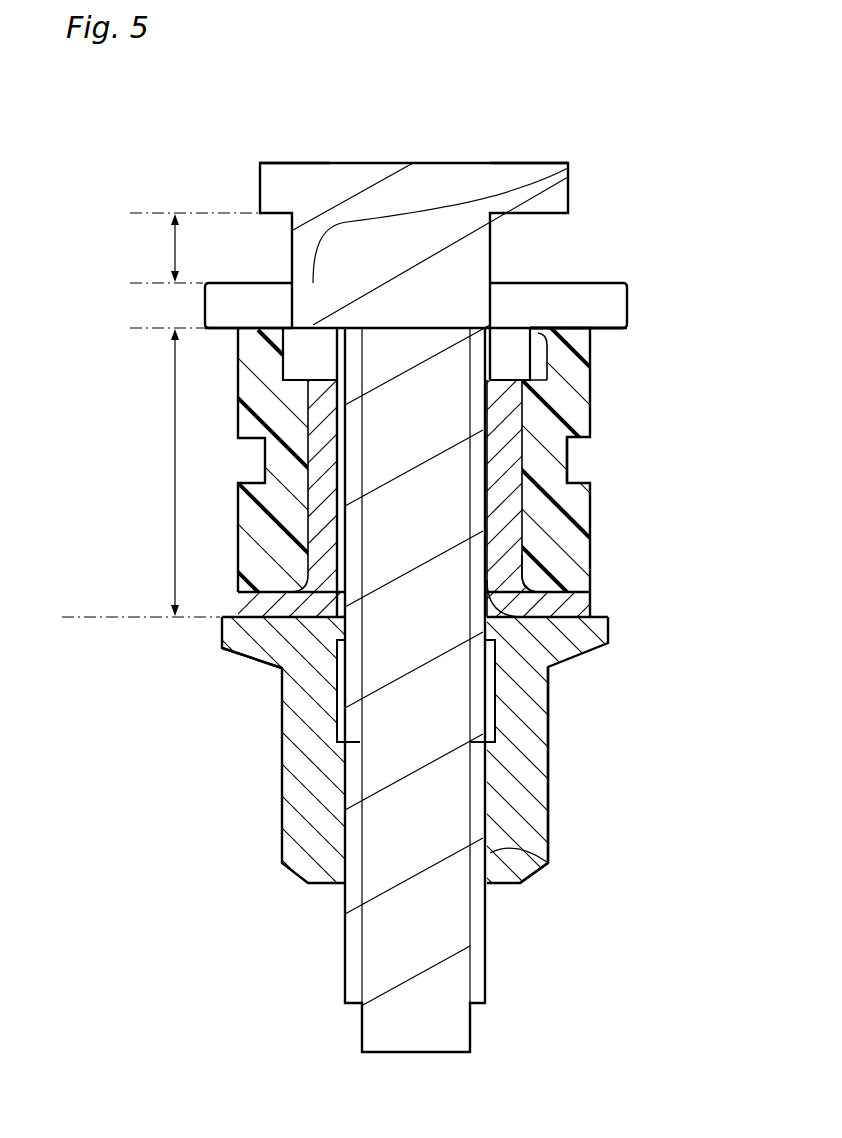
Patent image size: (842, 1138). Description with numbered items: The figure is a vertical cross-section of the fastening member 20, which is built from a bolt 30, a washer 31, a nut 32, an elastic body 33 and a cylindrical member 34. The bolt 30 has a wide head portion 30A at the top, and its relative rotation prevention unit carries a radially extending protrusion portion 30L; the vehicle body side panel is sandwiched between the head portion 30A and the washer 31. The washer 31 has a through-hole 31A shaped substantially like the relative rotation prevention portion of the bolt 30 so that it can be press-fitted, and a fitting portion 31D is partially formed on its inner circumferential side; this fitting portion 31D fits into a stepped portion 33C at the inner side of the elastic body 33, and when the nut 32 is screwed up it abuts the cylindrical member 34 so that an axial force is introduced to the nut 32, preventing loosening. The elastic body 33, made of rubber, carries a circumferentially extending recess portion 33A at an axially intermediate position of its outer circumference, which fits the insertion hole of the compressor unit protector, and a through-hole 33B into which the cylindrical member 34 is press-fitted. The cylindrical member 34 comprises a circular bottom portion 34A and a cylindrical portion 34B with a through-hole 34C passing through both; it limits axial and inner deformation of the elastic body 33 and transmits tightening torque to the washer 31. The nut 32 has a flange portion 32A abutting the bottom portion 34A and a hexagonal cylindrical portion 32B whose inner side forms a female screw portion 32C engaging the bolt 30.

The fastening member 20 is at (191, 172).
The bolt 30 is at (494, 972).
The head portion 30A is at (284, 175).
The protrusion portion 30L is at (553, 163).
The washer 31 is at (595, 303).
The through-hole 31A is at (490, 328).
The fitting portion 31D is at (505, 368).
The nut 32 is at (518, 774).
The flange portion 32A is at (222, 652).
The hexagonal cylindrical portion 32B is at (548, 828).
The female screw portion 32C is at (548, 866).
The elastic body 33 is at (537, 533).
The recess portion 33A is at (569, 459).
The through-hole 33B is at (540, 497).
The stepped portion 33C is at (547, 388).
The cylindrical member 34 is at (570, 608).
The bottom portion 34A is at (592, 620).
The cylindrical portion 34B is at (537, 578).
The through-hole 34C is at (577, 658).